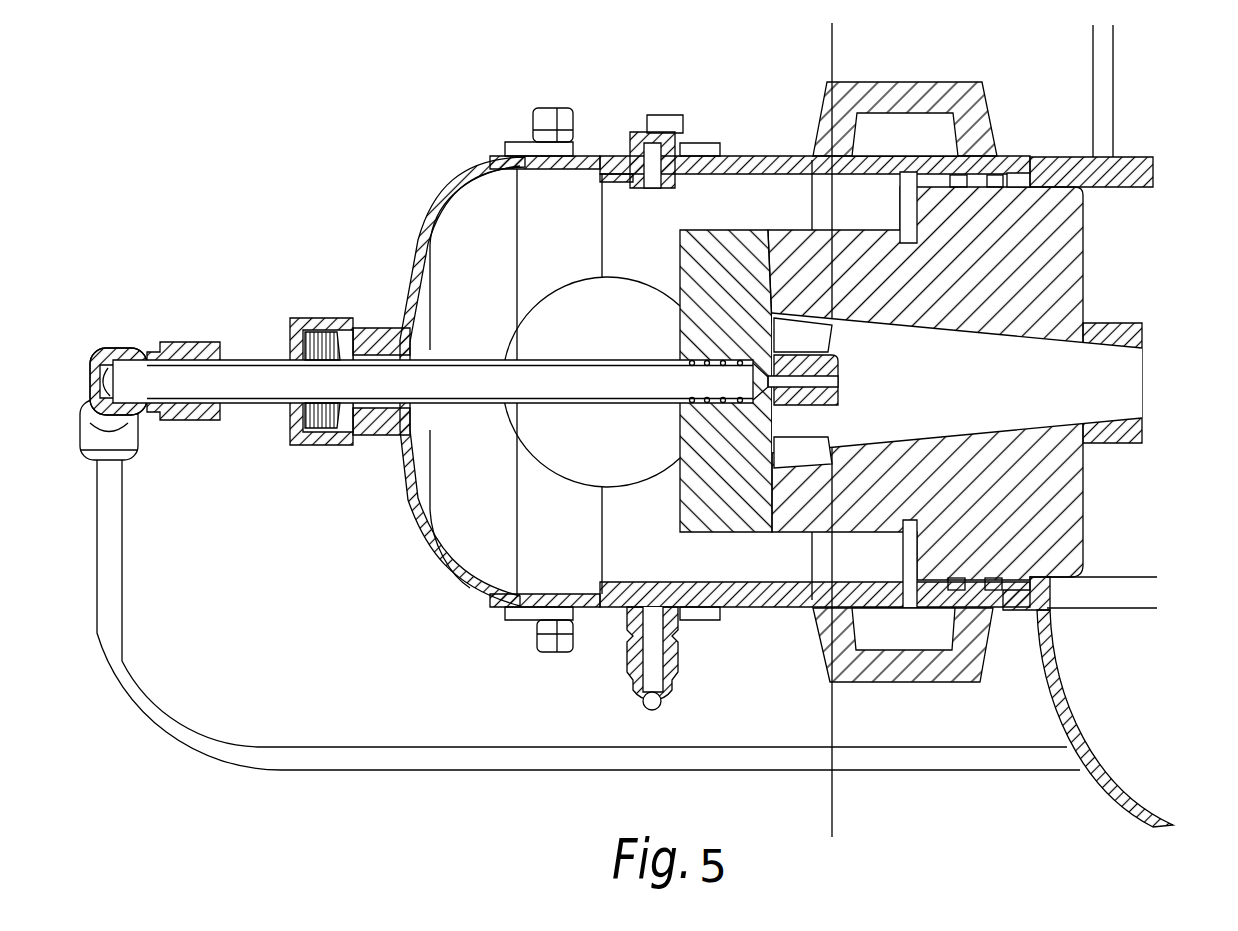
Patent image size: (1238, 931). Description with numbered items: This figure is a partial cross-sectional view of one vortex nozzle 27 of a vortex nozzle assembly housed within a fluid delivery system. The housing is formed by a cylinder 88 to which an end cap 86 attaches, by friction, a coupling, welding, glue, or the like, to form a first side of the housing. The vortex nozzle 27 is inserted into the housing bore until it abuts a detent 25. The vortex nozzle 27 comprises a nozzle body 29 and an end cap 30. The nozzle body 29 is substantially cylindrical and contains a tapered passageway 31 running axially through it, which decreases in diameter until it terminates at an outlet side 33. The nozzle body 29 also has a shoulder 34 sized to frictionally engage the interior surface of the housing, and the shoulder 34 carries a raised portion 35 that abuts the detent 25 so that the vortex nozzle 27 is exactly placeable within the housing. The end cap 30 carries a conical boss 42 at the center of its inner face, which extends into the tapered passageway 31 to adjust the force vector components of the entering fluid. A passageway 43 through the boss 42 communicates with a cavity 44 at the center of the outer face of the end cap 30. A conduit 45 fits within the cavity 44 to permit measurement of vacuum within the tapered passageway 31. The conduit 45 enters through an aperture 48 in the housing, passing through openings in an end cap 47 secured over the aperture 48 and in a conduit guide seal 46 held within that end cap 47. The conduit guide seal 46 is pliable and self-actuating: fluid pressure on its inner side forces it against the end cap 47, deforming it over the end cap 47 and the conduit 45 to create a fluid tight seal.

The detent 25 is at (903, 555).
The vortex nozzle 27 is at (1133, 271).
The nozzle body 29 is at (1017, 182).
The end cap 30 is at (720, 228).
The tapered passageway 31 is at (978, 392).
The outlet side 33 is at (1142, 380).
The shoulder 34 is at (797, 228).
The raised portion 35 is at (1022, 608).
The boss 42 is at (818, 410).
The passageway 43 is at (830, 382).
The cavity 44 is at (700, 382).
The conduit 45 is at (458, 406).
The conduit guide seal 46 is at (318, 362).
The end cap 47 is at (322, 318).
The aperture 48 is at (428, 350).
The end cap 86 is at (410, 498).
The cylinder 88 is at (1057, 157).